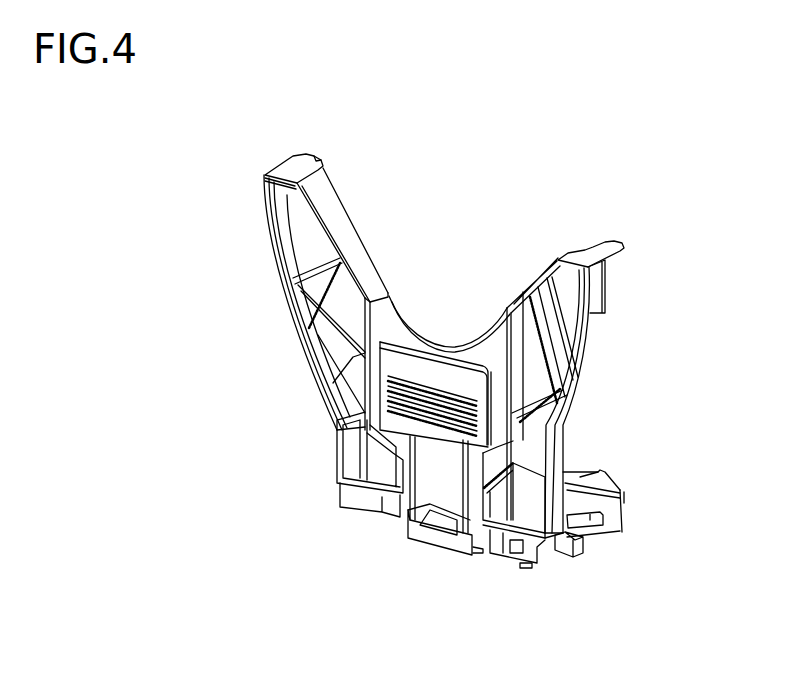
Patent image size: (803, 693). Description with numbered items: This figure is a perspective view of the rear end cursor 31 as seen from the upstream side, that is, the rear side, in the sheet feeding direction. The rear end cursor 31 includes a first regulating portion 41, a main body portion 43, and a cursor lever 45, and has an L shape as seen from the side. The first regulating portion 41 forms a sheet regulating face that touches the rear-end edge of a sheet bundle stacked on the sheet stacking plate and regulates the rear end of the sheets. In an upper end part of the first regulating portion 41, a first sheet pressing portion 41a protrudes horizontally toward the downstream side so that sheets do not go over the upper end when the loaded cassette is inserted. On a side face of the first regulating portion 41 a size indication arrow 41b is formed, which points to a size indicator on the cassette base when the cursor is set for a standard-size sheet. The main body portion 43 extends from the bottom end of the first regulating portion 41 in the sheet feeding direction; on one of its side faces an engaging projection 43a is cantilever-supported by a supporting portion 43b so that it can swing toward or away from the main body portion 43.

The rear end cursor 31 is at (533, 200).
The first regulating portion 41 is at (586, 377).
The first sheet pressing portion 41a is at (295, 166).
The size indication arrow 41b is at (560, 545).
The main body portion 43 is at (597, 479).
The engaging projection 43a is at (586, 551).
The supporting portion 43b is at (622, 520).
The cursor lever 45 is at (428, 373).